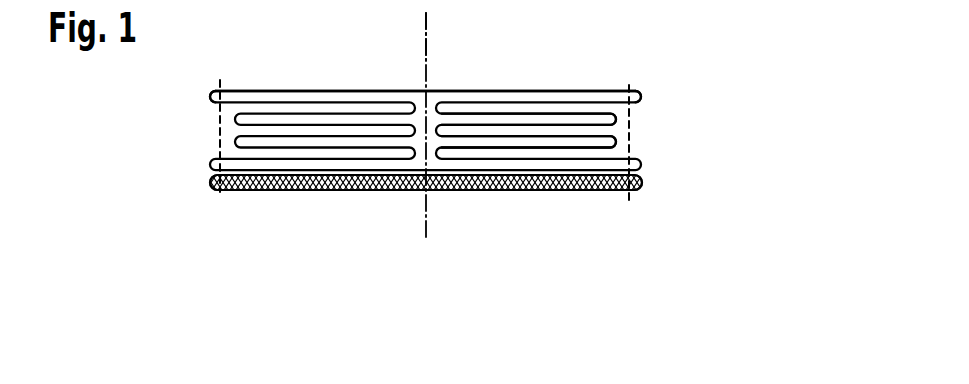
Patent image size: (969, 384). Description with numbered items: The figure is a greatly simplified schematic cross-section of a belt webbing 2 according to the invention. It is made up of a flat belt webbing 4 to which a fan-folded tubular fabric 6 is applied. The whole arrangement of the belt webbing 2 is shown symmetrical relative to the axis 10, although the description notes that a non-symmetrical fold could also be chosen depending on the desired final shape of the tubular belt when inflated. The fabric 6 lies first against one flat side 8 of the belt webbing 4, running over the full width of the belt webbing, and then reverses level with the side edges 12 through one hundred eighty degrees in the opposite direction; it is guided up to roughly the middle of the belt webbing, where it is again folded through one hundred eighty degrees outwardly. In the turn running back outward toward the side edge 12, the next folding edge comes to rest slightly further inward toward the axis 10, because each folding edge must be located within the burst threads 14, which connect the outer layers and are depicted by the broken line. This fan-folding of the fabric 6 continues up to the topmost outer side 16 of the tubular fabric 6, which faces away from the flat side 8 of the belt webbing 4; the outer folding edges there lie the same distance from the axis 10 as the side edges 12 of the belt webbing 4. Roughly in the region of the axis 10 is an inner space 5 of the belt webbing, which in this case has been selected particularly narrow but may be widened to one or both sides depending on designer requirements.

The belt webbing 2 is at (649, 78).
The belt webbing 4 is at (560, 192).
The inner space 5 is at (432, 91).
The tubular fabric 6 is at (630, 125).
The flat side 8 is at (628, 150).
The axis 10 is at (426, 26).
The side edges 12 is at (209, 179).
The burst threads 14 is at (214, 105).
The topmost outer side 16 is at (290, 90).